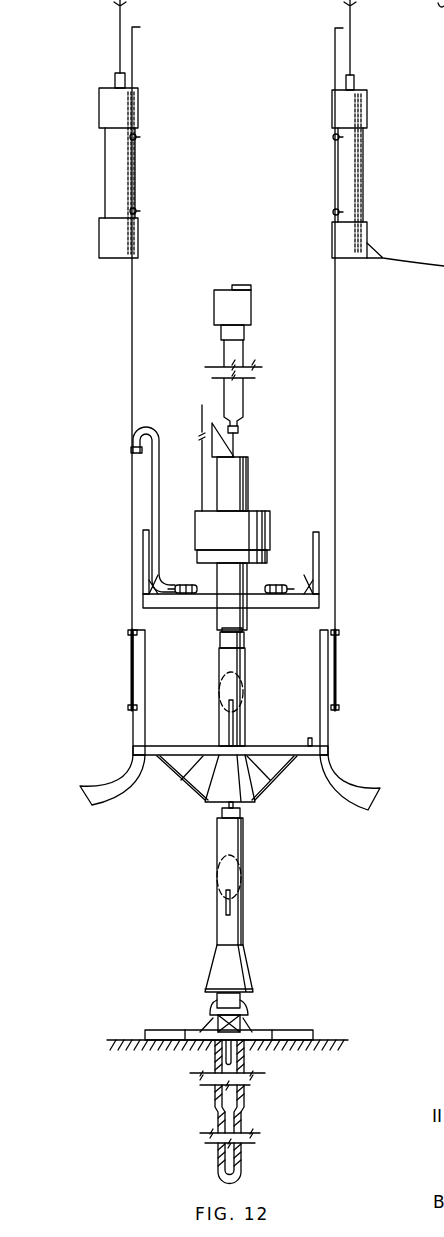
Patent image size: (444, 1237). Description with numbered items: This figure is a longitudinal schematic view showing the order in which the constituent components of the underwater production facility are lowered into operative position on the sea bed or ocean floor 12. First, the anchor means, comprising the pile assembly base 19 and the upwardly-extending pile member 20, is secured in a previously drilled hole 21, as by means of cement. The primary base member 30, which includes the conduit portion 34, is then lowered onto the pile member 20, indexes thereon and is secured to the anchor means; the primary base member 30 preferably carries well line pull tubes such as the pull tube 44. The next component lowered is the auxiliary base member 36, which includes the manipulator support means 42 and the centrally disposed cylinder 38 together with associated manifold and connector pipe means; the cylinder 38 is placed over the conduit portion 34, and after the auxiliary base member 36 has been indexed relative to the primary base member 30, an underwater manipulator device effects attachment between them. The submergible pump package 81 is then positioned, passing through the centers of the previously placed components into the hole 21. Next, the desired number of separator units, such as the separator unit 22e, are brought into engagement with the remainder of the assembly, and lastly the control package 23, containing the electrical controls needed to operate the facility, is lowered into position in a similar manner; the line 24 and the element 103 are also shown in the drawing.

The ocean floor 12 is at (330, 1040).
The pile assembly base 19 is at (287, 1032).
The pile member 20 is at (243, 910).
The drilled hole 21 is at (240, 1068).
The float cylinder 22e is at (108, 174).
The control package 23 is at (361, 180).
The tether line 24 is at (400, 258).
The primary base member 30 is at (308, 758).
The conduit portion 34 is at (245, 657).
The auxiliary base member 36 is at (286, 602).
The centrally disposed cylinder 38 is at (248, 470).
The manipulator support means 42 is at (270, 520).
The pull tube 44 is at (345, 782).
The submergible pump package 81 is at (247, 309).
The cable 103 is at (421, 6).